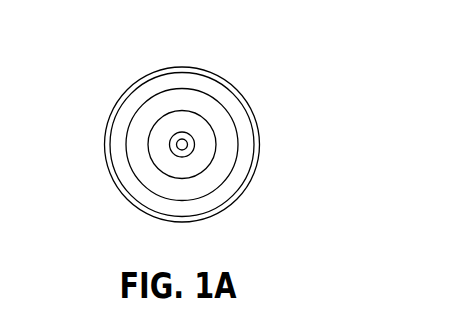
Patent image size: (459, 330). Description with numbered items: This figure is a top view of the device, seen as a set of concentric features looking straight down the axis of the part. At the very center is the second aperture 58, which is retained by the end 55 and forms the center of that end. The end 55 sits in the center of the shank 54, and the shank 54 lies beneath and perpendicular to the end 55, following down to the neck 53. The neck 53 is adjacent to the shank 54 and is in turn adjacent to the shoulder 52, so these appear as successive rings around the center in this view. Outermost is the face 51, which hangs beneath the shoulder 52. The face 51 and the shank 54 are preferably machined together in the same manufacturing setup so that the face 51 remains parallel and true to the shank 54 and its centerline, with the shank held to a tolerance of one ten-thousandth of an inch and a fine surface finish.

The face 51 is at (101, 189).
The shoulder 52 is at (243, 127).
The neck 53 is at (138, 112).
The shank 54 is at (212, 182).
The end 55 is at (175, 117).
The second aperture 58 is at (189, 150).